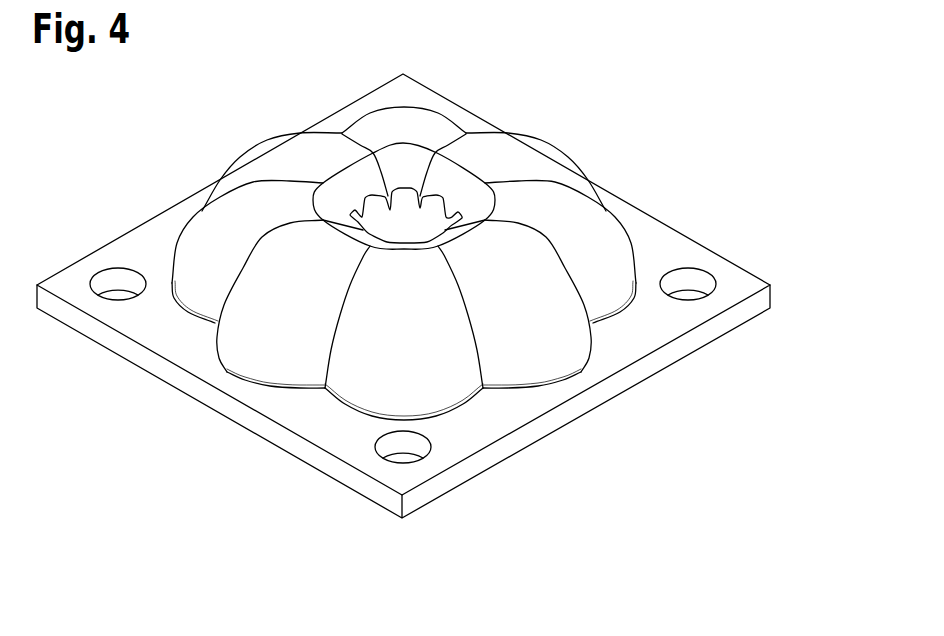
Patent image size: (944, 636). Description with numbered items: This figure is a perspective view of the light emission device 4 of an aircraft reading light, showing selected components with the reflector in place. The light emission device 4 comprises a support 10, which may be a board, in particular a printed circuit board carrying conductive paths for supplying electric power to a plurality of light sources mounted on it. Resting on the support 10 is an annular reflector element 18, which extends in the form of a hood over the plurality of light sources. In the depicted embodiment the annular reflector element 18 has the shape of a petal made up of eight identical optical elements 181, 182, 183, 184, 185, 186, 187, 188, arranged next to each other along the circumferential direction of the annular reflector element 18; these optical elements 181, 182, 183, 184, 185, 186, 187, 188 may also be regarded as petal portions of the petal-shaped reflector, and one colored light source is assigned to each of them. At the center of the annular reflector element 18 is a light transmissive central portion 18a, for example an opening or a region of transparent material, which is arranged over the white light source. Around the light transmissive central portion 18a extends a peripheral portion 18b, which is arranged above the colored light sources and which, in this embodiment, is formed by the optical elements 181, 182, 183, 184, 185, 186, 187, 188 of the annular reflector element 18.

The light emission device 4 is at (765, 143).
The support 10 is at (493, 427).
The annular reflector element 18 is at (590, 136).
The light transmissive central portion 18a is at (405, 205).
The peripheral portion 18b is at (218, 134).
The optical element 181 is at (538, 157).
The optical element 182 is at (372, 133).
The optical element 183 is at (286, 150).
The optical element 184 is at (193, 243).
The optical element 185 is at (250, 350).
The optical element 186 is at (360, 378).
The optical element 187 is at (558, 345).
The optical element 188 is at (603, 228).